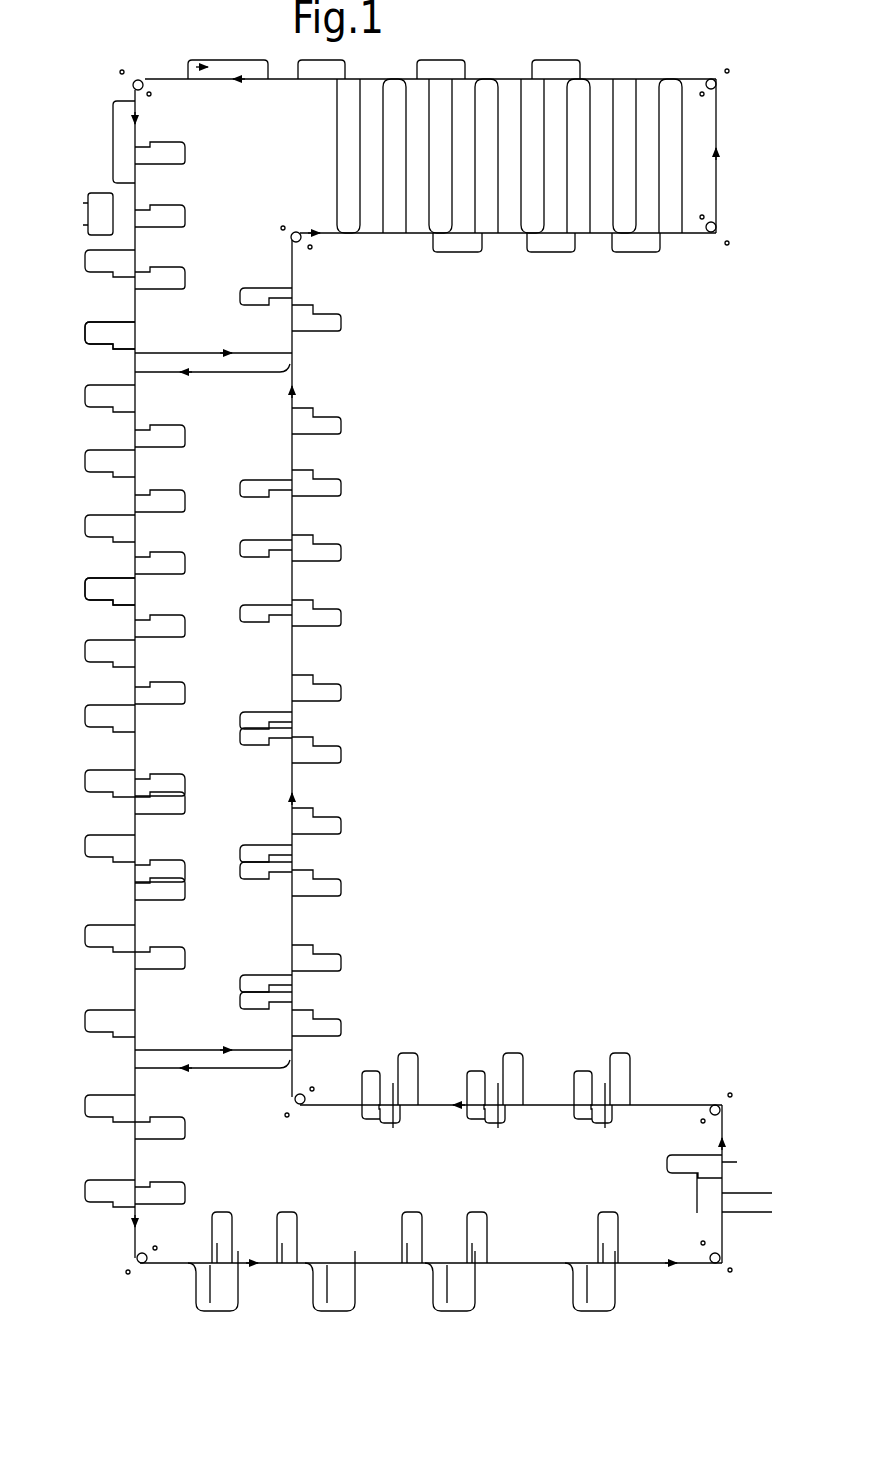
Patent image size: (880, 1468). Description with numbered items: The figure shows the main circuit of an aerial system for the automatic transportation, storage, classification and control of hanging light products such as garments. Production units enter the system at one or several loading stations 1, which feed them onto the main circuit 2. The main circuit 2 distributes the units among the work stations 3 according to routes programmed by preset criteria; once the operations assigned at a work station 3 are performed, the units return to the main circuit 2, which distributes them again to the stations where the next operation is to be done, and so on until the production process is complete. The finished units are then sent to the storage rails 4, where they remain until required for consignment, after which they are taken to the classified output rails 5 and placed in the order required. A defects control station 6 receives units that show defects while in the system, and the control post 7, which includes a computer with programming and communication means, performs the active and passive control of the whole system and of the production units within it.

The loading station 1 is at (188, 62).
The main circuit 2 is at (130, 300).
The work station 3 is at (105, 397).
The storage rail 4 is at (432, 160).
The classified output rail 5 is at (316, 82).
The defects control station 6 is at (98, 258).
The control post 7 is at (100, 213).